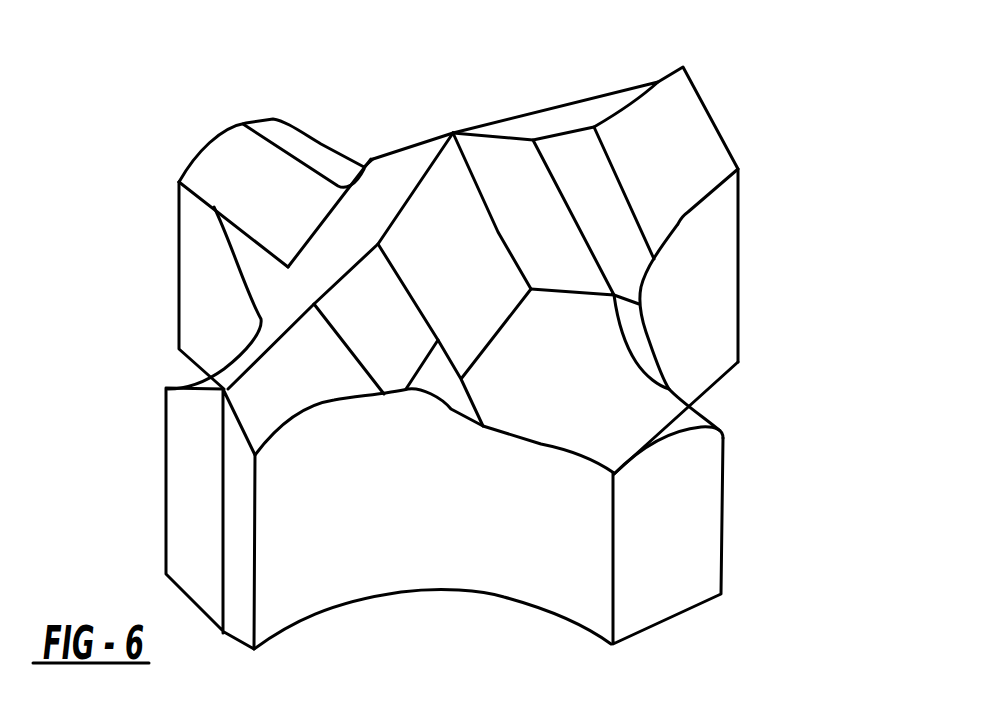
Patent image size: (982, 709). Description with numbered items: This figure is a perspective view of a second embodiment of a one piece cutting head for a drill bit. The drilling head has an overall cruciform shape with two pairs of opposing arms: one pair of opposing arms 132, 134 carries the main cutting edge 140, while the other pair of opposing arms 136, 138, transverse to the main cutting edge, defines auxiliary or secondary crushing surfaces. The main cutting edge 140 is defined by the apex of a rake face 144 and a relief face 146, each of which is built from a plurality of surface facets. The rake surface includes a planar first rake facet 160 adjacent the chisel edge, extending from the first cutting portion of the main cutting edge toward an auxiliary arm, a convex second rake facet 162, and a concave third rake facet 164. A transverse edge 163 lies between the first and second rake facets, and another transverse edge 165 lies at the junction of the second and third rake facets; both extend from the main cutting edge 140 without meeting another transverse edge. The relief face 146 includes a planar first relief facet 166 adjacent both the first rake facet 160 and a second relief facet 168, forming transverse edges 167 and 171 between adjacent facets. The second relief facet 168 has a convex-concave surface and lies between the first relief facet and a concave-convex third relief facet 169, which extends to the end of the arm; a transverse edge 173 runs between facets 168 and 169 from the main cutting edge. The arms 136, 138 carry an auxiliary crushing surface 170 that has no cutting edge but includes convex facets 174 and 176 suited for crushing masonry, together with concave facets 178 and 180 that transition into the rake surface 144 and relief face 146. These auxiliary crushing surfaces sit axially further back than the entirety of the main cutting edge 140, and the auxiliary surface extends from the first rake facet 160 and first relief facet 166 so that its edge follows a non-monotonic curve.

The opposing arm 132 is at (656, 80).
The opposing arm 134 is at (165, 386).
The opposing arm 136 is at (648, 590).
The opposing arm 138 is at (257, 117).
The main cutting edge 140 is at (471, 122).
The rake face 144 is at (545, 106).
The relief face 146 is at (290, 290).
The first rake facet 160 is at (468, 275).
The second rake facet 162 is at (393, 345).
The transverse edge 163 is at (403, 390).
The third rake facet 164 is at (310, 383).
The transverse edge 165 is at (350, 350).
The first relief facet 166 is at (537, 223).
The transverse edge 167 is at (462, 173).
The second relief facet 168 is at (614, 217).
The third relief facet 169 is at (681, 161).
The auxiliary crushing surface 170 is at (648, 414).
The transverse edge 171 is at (535, 161).
The transverse edge 173 is at (600, 148).
The convex facet 174 is at (675, 413).
The convex facet 176 is at (600, 437).
The concave facet 178 is at (500, 420).
The concave facet 180 is at (622, 331).